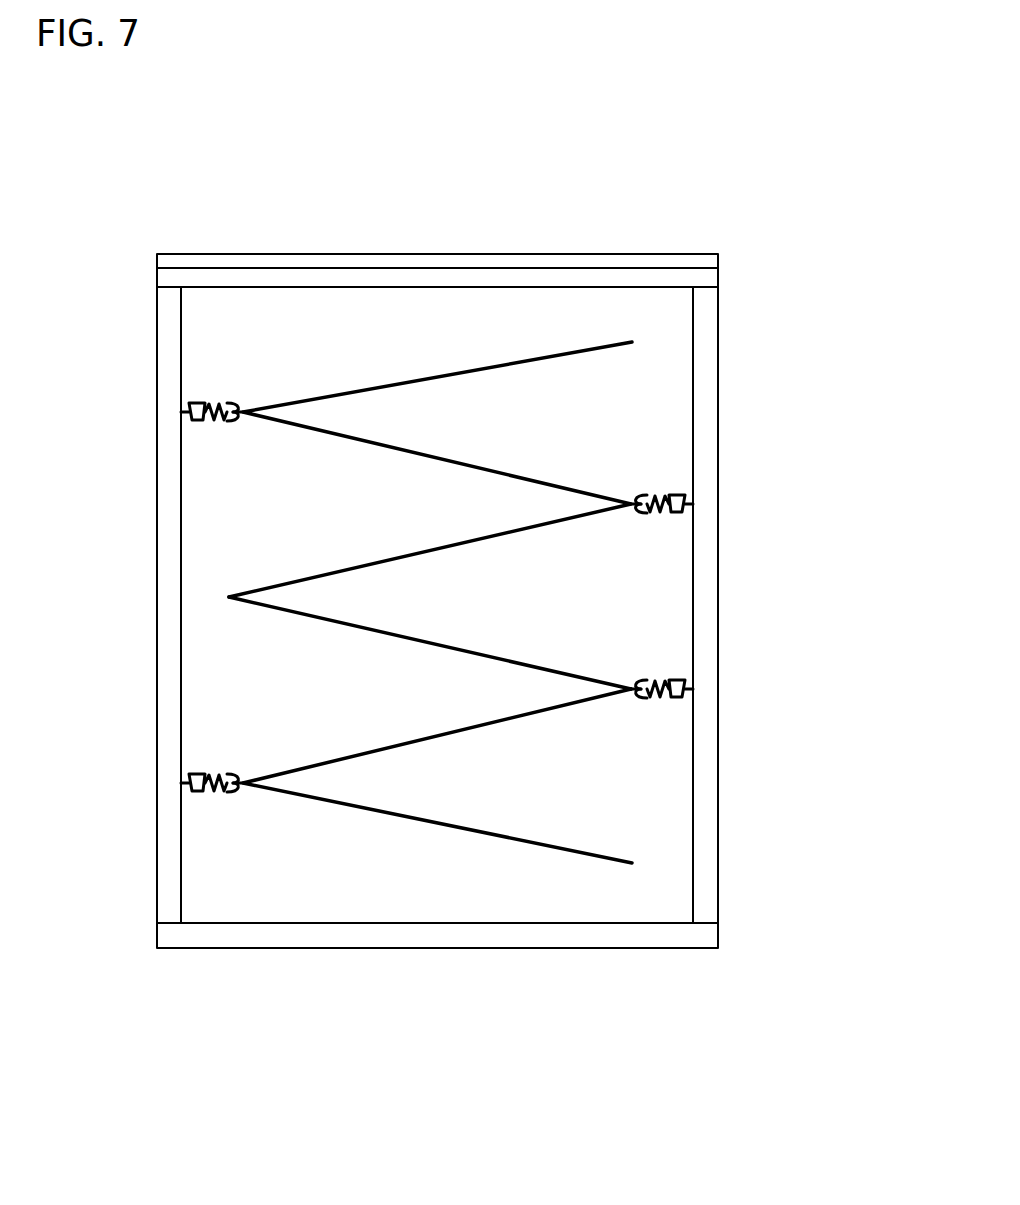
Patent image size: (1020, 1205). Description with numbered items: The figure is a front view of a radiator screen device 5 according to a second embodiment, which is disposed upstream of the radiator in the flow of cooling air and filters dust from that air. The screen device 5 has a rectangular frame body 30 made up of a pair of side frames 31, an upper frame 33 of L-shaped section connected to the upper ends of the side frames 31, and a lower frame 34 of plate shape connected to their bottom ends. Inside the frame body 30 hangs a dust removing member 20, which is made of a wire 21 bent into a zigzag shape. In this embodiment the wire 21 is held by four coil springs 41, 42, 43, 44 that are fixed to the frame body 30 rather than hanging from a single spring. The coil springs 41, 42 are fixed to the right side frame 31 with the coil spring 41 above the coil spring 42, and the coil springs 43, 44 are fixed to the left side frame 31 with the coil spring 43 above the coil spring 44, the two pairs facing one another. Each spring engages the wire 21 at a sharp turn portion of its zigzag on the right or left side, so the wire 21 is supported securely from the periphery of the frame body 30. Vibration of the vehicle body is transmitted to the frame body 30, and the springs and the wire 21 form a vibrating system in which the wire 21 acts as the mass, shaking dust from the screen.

The screen device 5 is at (666, 216).
The dust removing member 20 is at (317, 570).
The wire 21 is at (500, 650).
The frame body 30 is at (155, 328).
The side frame 31 is at (155, 652).
The upper frame 33 is at (346, 278).
The lower frame 34 is at (398, 948).
The coil spring 41 is at (197, 400).
The coil spring 42 is at (197, 772).
The coil spring 43 is at (676, 492).
The coil spring 44 is at (676, 679).